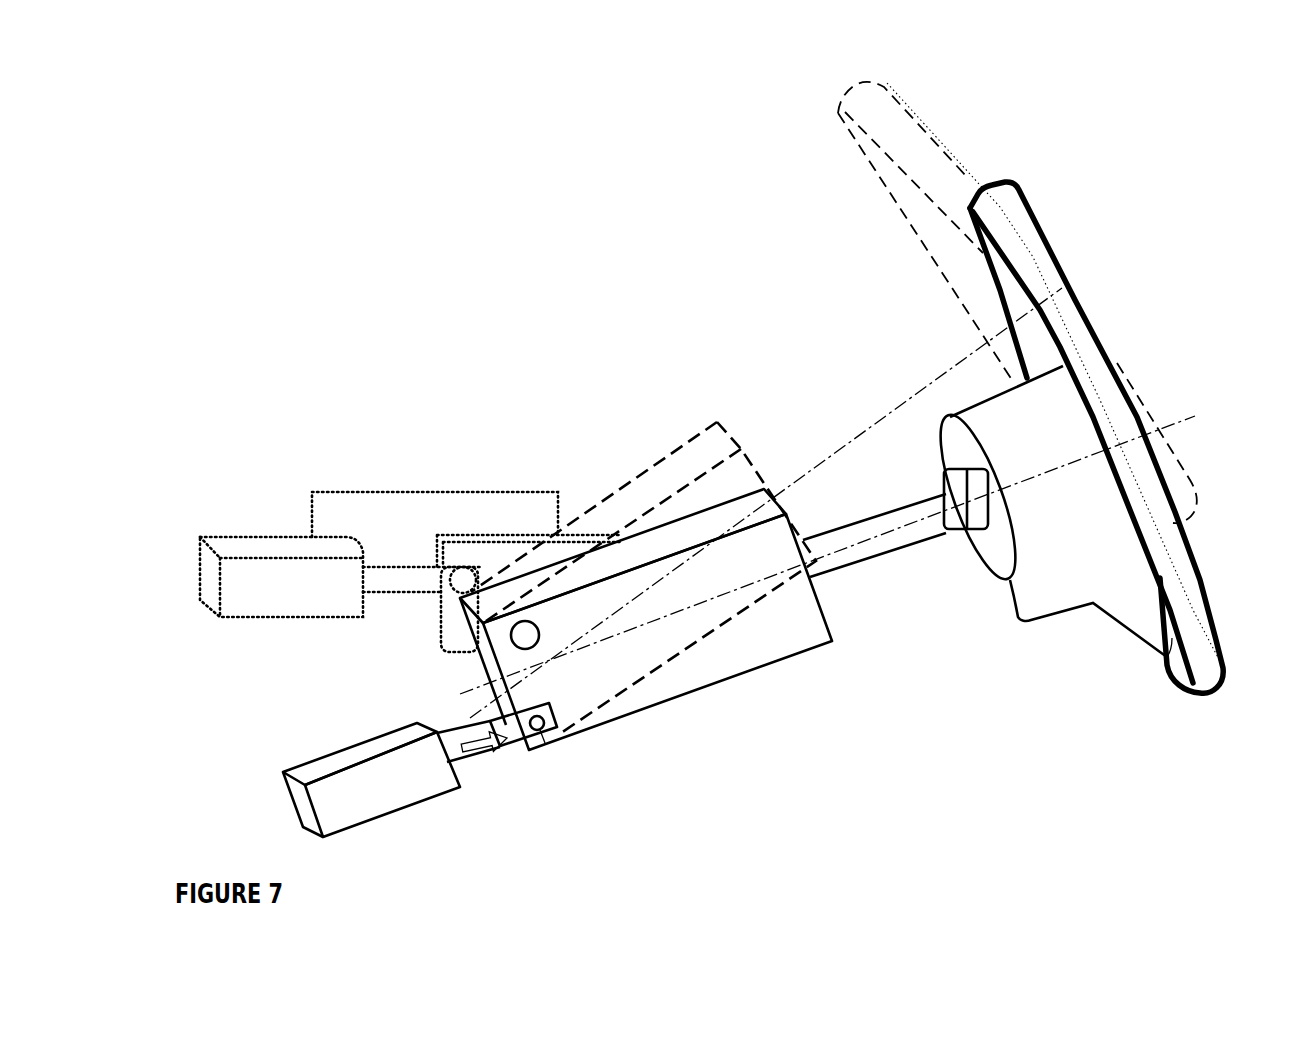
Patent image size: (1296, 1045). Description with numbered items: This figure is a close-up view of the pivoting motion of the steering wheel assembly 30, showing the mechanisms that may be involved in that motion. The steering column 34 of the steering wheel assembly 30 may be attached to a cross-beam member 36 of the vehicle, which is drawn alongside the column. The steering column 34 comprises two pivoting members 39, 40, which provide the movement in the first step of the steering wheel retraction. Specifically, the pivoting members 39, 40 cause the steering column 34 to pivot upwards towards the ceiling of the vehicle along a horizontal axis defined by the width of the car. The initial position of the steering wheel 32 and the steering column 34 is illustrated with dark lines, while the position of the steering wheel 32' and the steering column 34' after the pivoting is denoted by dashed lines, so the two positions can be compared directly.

The steering wheel assembly 30 is at (670, 295).
The steering wheel 32 is at (1074, 388).
The steering wheel 32' is at (1017, 297).
The steering column 34 is at (646, 619).
The steering column 34' is at (766, 510).
The cross-beam member 36 is at (346, 487).
The pivoting member 39 is at (497, 668).
The pivoting member 40 is at (557, 727).